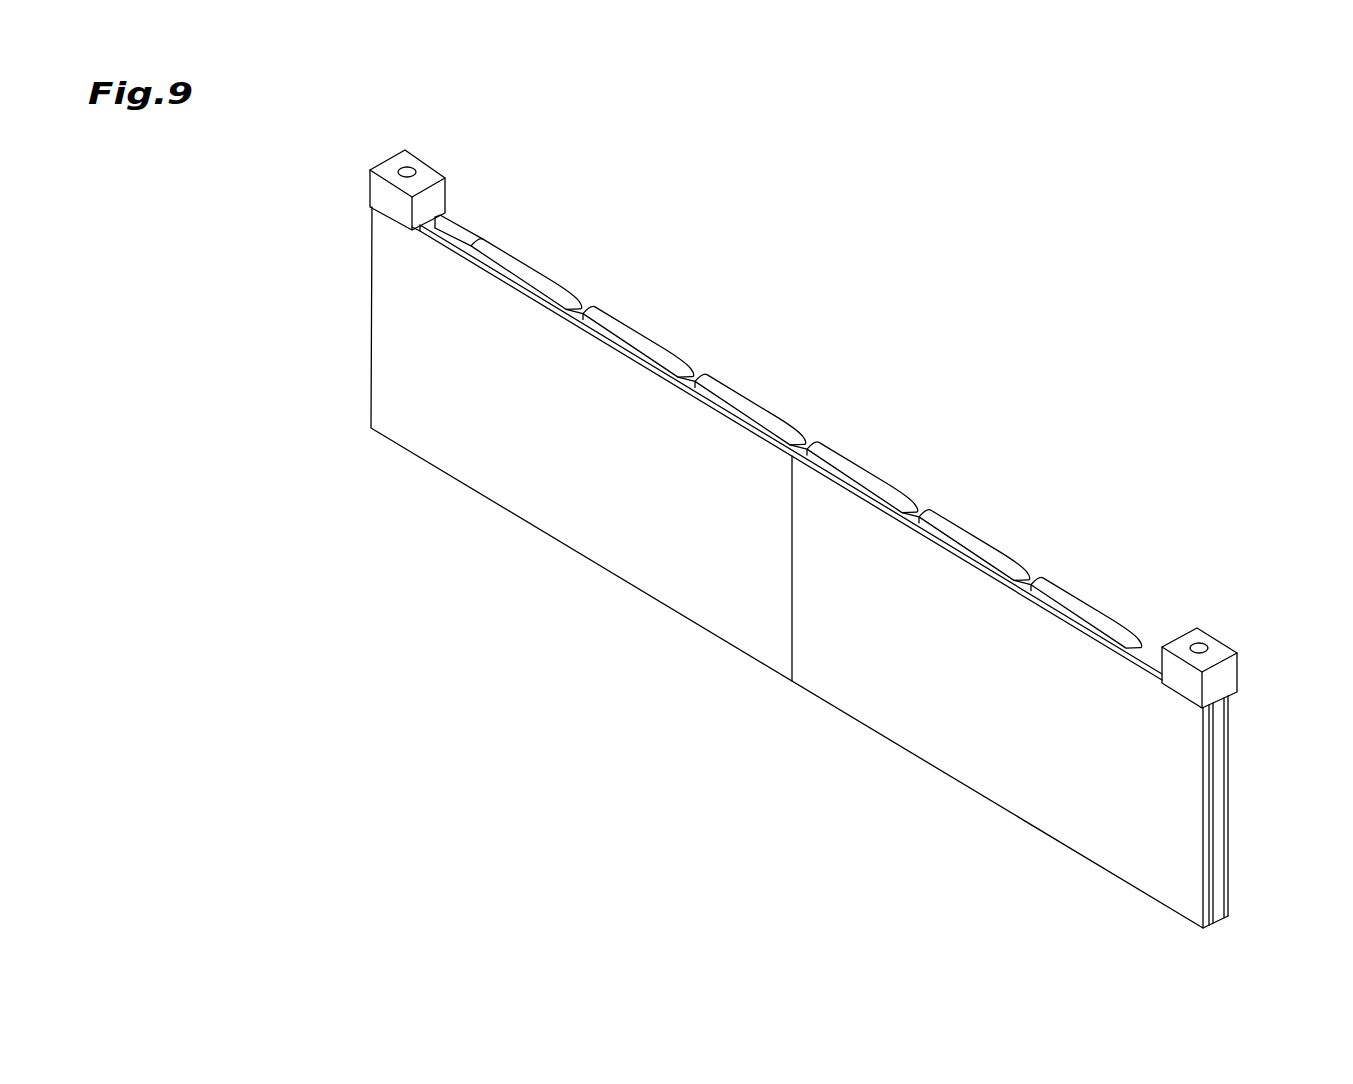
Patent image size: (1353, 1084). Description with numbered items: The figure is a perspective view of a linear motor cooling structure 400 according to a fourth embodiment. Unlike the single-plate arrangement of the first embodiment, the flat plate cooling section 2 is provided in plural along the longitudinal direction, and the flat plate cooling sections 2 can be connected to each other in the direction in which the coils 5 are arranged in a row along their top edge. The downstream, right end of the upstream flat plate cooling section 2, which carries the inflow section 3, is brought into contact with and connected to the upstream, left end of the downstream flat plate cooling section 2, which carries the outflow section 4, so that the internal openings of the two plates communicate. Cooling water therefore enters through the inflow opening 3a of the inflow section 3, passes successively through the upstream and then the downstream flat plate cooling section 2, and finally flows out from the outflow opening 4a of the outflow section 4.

The linear motor cooling structure 400 is at (884, 346).
The flat plate cooling section 2 is at (468, 229).
The inflow section 3 is at (419, 170).
The inflow opening 3a is at (418, 172).
The outflow section 4 is at (1242, 622).
The outflow opening 4a is at (1208, 648).
The coil 5 is at (530, 270).